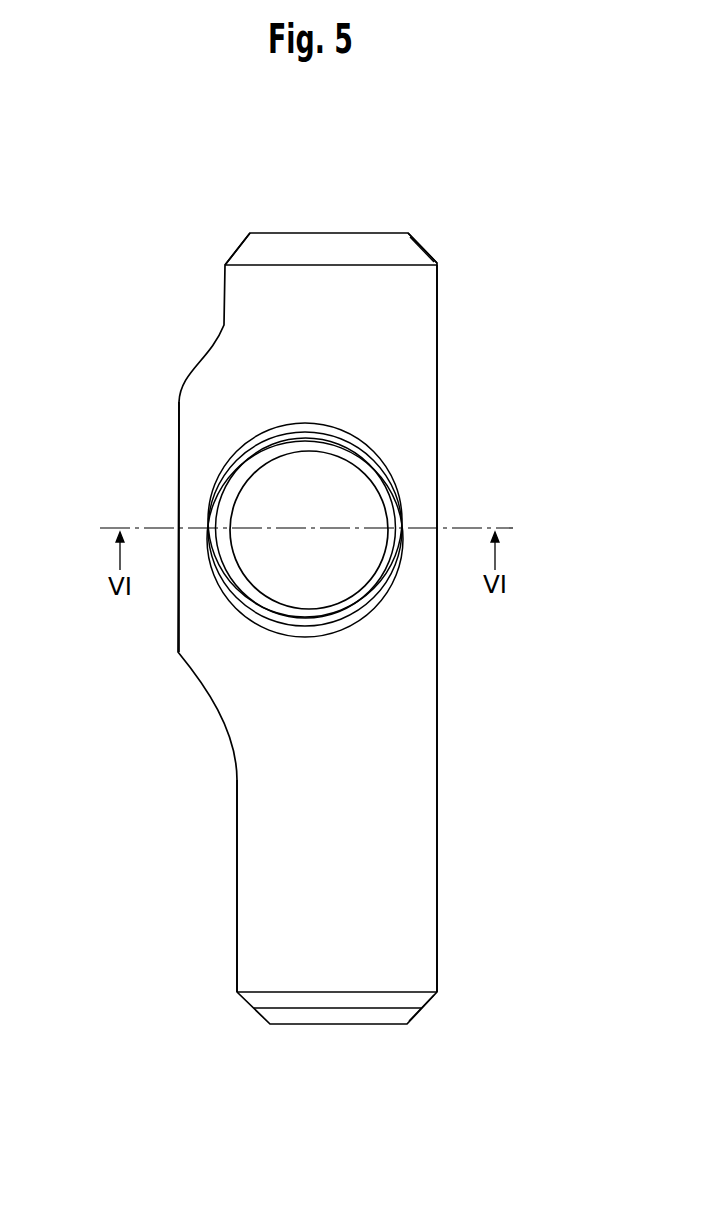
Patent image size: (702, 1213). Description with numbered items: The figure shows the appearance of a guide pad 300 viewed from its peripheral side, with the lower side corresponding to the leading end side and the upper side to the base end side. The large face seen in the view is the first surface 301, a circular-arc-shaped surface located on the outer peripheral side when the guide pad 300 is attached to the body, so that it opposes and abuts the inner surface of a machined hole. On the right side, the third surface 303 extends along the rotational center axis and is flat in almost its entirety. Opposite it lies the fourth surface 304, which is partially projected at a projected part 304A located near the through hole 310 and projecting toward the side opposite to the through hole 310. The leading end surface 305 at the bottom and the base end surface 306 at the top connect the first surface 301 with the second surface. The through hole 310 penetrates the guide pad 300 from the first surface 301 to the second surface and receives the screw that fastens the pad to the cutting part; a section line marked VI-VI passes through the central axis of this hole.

The guide pad 300 is at (307, 629).
The first surface 301 is at (392, 723).
The third surface 303 is at (438, 853).
The fourth surface 304 is at (237, 862).
The projected part 304A is at (178, 460).
The leading end surface 305 is at (320, 1026).
The base end surface 306 is at (323, 232).
The through hole 310 is at (350, 487).